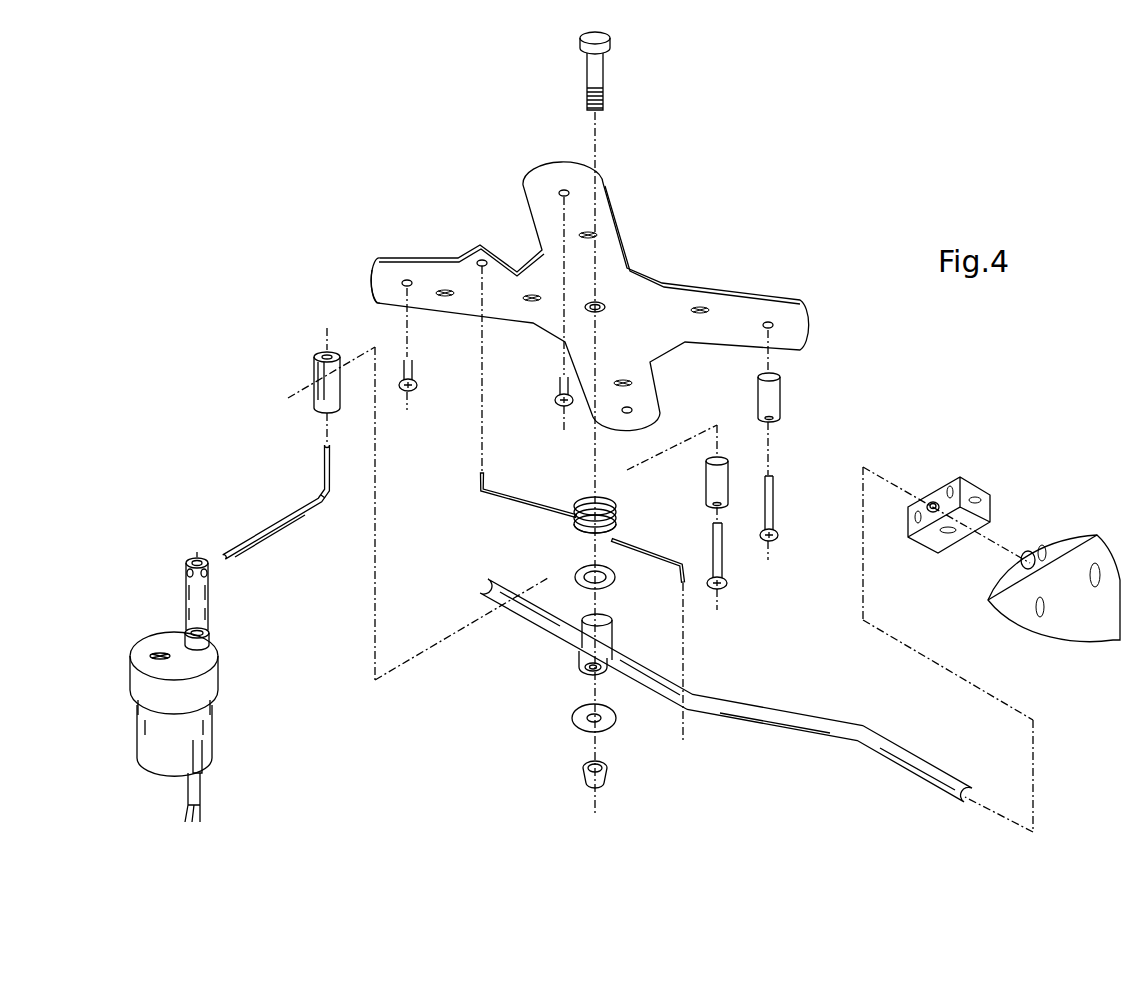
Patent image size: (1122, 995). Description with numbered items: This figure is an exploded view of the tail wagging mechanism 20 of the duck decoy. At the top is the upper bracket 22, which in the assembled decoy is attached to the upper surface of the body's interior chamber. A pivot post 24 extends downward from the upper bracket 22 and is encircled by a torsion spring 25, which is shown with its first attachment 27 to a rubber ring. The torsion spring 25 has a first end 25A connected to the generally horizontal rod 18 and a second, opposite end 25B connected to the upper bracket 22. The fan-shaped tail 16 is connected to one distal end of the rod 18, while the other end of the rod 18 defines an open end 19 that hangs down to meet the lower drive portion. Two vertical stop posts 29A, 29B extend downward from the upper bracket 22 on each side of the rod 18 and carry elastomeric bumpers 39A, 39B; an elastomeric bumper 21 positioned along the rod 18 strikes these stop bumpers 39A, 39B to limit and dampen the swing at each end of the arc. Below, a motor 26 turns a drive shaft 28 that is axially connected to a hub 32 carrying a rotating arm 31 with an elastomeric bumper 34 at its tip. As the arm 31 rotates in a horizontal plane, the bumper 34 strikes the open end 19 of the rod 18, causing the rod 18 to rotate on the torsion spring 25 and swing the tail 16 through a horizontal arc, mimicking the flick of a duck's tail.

The tail 16 is at (1067, 537).
The rod 18 is at (770, 723).
The open end 19 is at (497, 584).
The tail wagging mechanism 20 is at (786, 177).
The elastomeric bumper 21 is at (941, 490).
The upper bracket 22 is at (608, 178).
The pivot post 24 is at (606, 75).
The torsion spring 25 is at (581, 505).
The first end 25A is at (682, 556).
The second end 25B is at (480, 491).
The motor 26 is at (132, 672).
The first attachment 27 is at (612, 581).
The drive shaft 28 is at (188, 632).
The vertical stop post 29A is at (775, 493).
The vertical stop post 29B is at (724, 569).
The rotating arm 31 is at (275, 526).
The hub 32 is at (211, 597).
The elastomeric bumper 34 is at (313, 356).
The elastomeric bumper 39A is at (781, 382).
The elastomeric bumper 39B is at (705, 484).